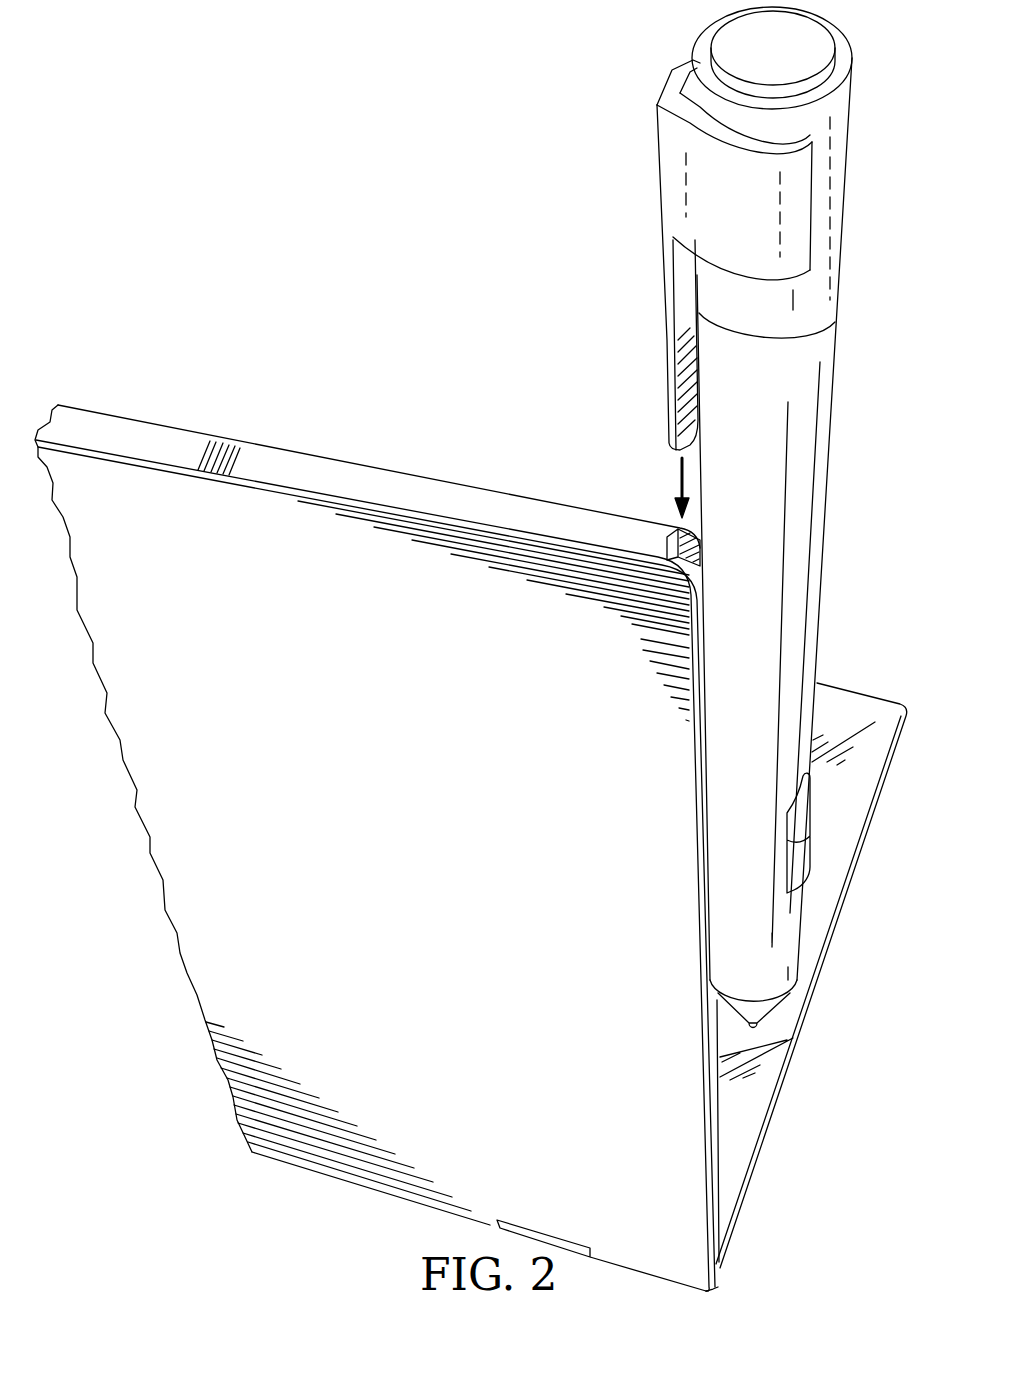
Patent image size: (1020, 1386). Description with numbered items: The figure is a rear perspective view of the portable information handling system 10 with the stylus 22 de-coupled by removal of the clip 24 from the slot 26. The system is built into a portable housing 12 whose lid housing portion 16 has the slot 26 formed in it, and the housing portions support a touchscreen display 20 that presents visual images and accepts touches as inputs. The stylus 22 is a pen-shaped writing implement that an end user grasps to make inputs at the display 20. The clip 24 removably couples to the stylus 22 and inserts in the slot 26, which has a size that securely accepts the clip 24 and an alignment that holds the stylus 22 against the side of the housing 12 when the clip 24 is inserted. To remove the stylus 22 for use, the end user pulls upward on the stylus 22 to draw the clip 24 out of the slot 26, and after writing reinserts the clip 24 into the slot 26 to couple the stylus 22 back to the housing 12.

The portable information handling system 10 is at (292, 1193).
The portable housing 12 is at (848, 936).
The lid housing portion 16 is at (441, 868).
The touchscreen display 20 is at (858, 812).
The stylus 22 is at (833, 402).
The clip 24 is at (670, 180).
The slot 26 is at (668, 552).